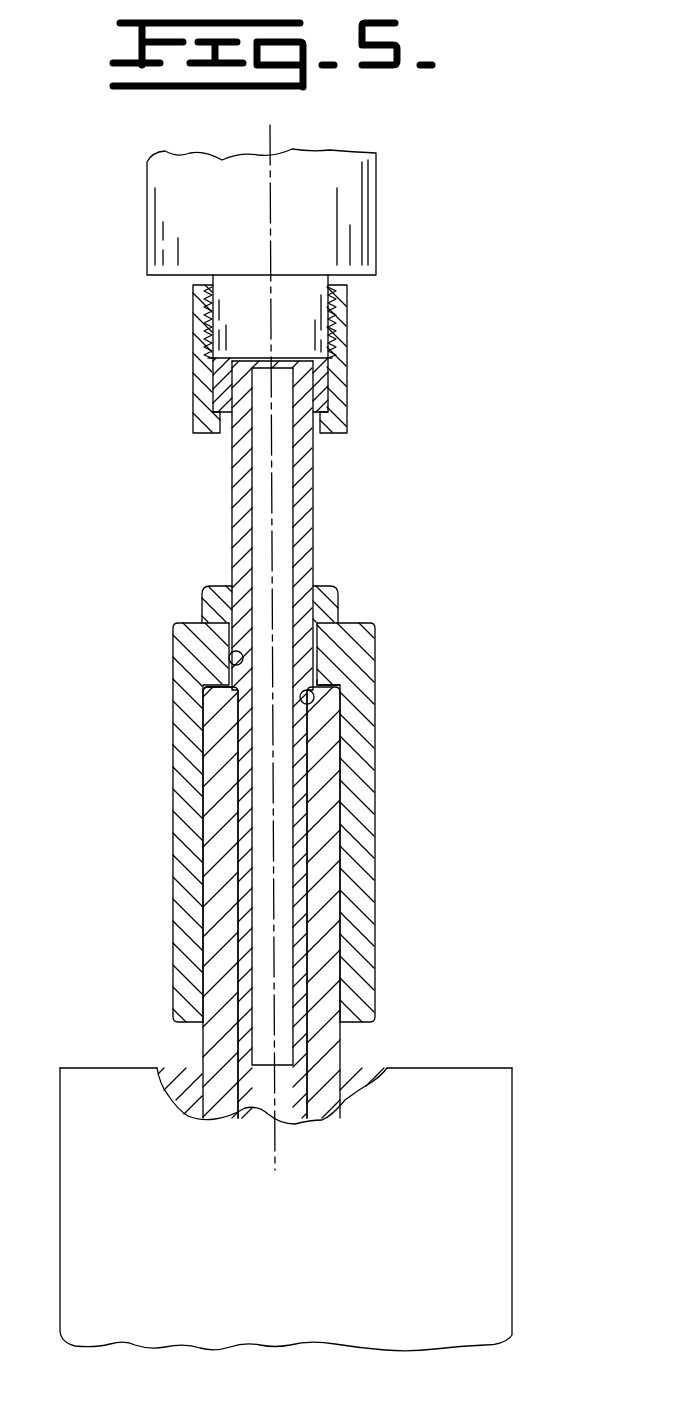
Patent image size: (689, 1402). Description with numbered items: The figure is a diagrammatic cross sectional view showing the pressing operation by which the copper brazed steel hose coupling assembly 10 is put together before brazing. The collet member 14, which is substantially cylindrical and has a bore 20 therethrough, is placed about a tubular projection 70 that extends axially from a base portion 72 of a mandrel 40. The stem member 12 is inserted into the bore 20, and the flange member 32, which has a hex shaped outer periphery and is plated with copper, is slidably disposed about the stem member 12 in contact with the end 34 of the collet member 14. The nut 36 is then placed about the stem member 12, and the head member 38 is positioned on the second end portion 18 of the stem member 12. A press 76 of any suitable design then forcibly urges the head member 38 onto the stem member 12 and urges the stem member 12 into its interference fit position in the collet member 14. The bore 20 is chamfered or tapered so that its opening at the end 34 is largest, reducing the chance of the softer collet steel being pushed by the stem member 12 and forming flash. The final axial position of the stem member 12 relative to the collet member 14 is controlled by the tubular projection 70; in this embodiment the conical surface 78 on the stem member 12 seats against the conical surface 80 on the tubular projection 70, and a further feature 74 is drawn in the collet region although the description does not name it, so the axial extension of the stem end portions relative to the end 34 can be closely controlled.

The hose coupling assembly 10 is at (126, 494).
The stem member 12 is at (314, 528).
The collet member 14 is at (376, 775).
The second end portion 18 is at (314, 408).
The bore 20 is at (228, 658).
The flange member 32 is at (338, 592).
The end 34 is at (202, 618).
The nut 36 is at (195, 390).
The head member 38 is at (324, 388).
The mandrel 40 is at (443, 1066).
The tubular projection 70 is at (330, 838).
The base portion 72 is at (495, 1188).
The shoulder 74 is at (328, 677).
The press 76 is at (376, 222).
The conical surface 78 is at (203, 714).
The conical surface 80 is at (315, 703).